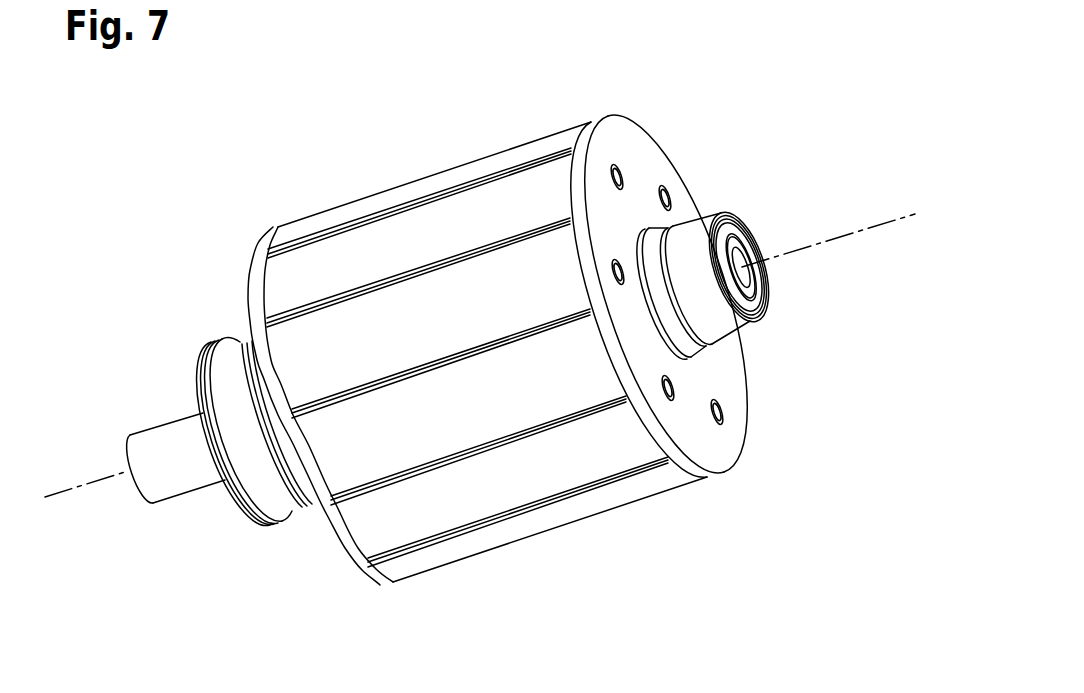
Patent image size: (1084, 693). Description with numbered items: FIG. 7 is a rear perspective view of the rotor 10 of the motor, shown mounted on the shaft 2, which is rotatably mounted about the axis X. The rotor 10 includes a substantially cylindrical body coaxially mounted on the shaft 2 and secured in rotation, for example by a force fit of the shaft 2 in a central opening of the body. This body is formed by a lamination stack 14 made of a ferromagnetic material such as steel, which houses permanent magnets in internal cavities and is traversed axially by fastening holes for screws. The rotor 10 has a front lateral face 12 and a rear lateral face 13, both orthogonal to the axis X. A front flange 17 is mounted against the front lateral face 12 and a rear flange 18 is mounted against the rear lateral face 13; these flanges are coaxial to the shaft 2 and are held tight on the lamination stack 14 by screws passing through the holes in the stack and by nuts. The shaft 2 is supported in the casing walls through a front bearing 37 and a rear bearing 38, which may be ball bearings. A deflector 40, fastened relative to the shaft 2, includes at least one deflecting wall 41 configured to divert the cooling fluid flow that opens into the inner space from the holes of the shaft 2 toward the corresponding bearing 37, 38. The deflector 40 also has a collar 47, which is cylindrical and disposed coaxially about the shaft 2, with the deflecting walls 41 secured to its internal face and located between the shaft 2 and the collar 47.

The rotor 10 is at (553, 131).
The shaft 2 is at (174, 468).
The front lateral face 12 is at (256, 288).
The rear lateral face 13 is at (576, 182).
The lamination stack 14 is at (348, 262).
The front flange 17 is at (251, 245).
The rear flange 18 is at (743, 456).
The front bearing 37 is at (234, 500).
The rear bearing 38 is at (706, 219).
The deflector 40 is at (283, 473).
The deflecting wall 41 is at (680, 225).
The collar 47 is at (646, 234).
The axis X is at (883, 228).